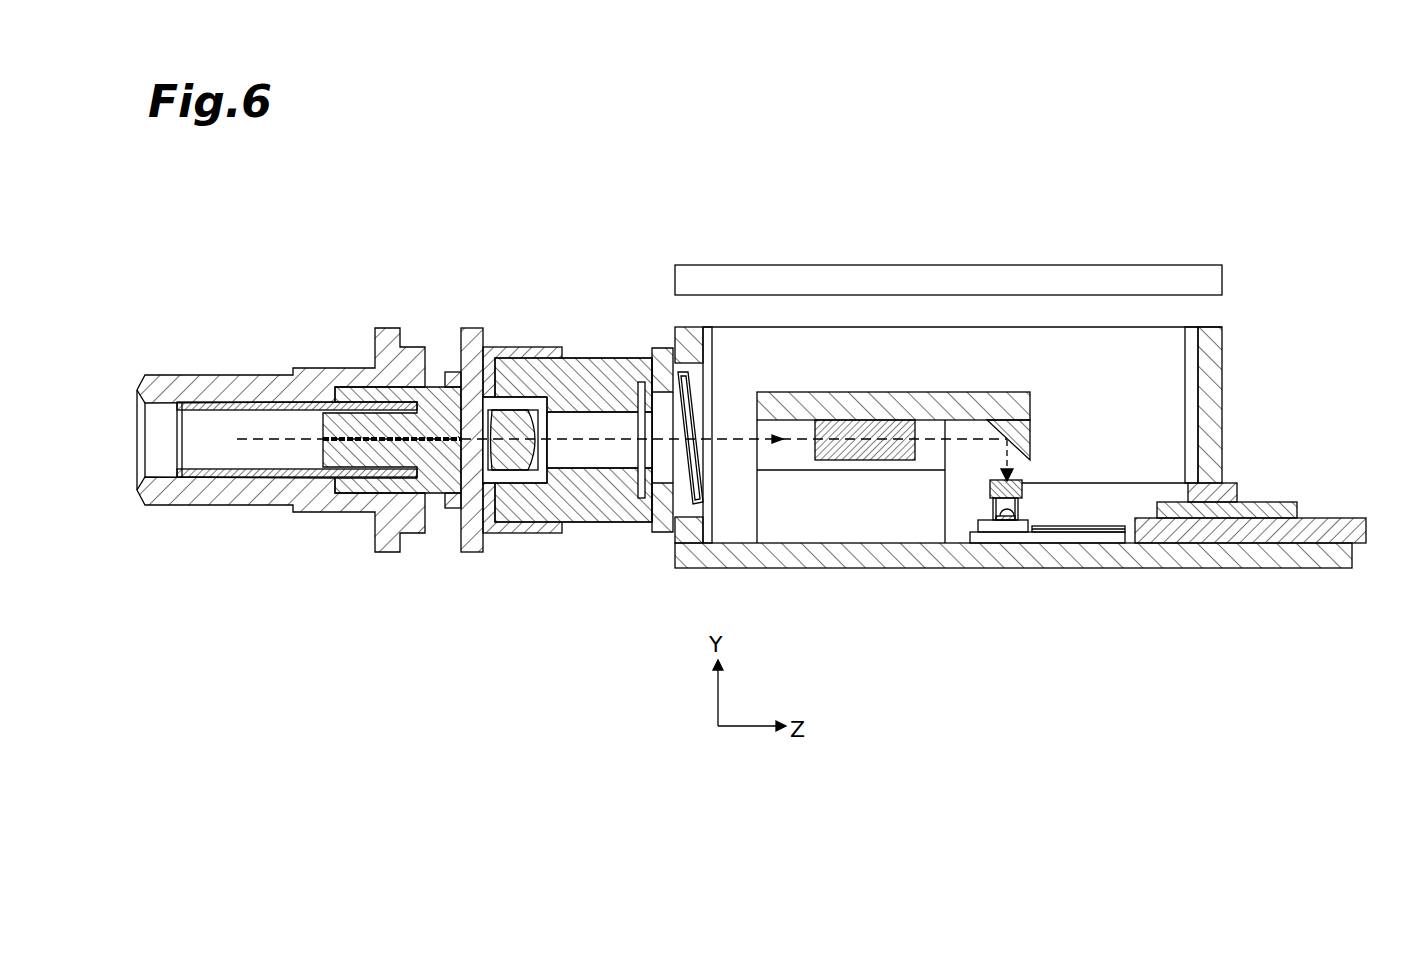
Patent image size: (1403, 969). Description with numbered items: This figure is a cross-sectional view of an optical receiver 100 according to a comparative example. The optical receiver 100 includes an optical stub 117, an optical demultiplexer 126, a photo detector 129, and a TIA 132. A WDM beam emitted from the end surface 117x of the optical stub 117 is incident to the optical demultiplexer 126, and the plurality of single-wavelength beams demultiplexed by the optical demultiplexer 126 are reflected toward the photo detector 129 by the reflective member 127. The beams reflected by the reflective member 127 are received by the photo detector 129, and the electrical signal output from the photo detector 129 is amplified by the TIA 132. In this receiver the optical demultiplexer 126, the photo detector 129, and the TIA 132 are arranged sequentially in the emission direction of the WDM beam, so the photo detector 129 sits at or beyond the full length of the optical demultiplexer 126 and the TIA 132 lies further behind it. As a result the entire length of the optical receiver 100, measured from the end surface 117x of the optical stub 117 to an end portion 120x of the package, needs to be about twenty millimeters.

The optical receiver 100 is at (1185, 214).
The optical stub 117 is at (368, 462).
The end surface 117x is at (463, 453).
The end portion of a package 120x is at (1223, 396).
The optical demultiplexer 126 is at (852, 462).
The reflective member 127 is at (1033, 434).
The photo detector 129 is at (993, 512).
The TIA 132 is at (1089, 525).